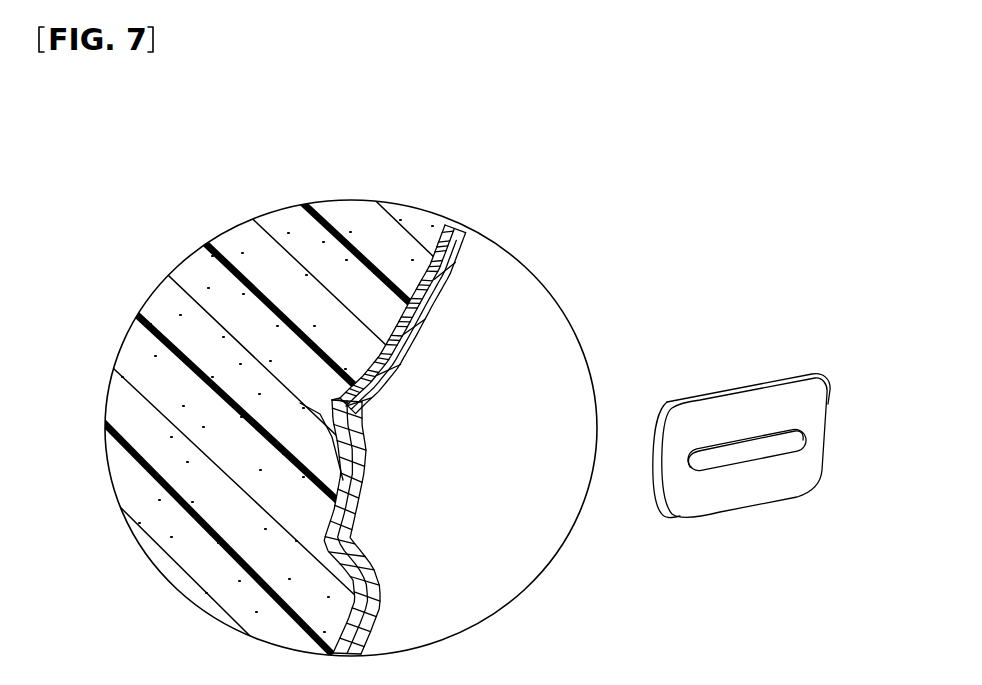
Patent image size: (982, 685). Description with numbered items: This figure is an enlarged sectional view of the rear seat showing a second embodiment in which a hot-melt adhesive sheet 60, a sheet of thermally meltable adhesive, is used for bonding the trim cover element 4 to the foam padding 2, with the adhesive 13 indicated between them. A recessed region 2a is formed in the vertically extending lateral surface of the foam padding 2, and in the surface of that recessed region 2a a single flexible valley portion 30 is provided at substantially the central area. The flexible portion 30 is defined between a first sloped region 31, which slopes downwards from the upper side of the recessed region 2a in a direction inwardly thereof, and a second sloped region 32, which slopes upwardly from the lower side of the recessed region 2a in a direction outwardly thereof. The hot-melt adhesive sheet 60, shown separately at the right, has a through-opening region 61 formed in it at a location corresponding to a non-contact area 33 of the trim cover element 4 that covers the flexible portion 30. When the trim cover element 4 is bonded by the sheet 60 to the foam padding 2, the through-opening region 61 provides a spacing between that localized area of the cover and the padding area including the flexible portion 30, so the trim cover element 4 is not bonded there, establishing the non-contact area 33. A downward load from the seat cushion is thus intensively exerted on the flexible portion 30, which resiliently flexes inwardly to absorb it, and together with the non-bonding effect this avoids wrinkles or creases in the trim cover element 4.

The foam padding 2 is at (208, 278).
The recessed region 2a is at (430, 271).
The adhesive 13 is at (452, 226).
The trim cover element 4 is at (437, 295).
The flexible valley portion 30 is at (340, 398).
The first sloped region 31 is at (356, 395).
The second sloped region 32 is at (362, 422).
The non-contact area 33 is at (355, 402).
The hot-melt adhesive sheet 60 is at (376, 381).
The through-opening region 61 is at (340, 398).